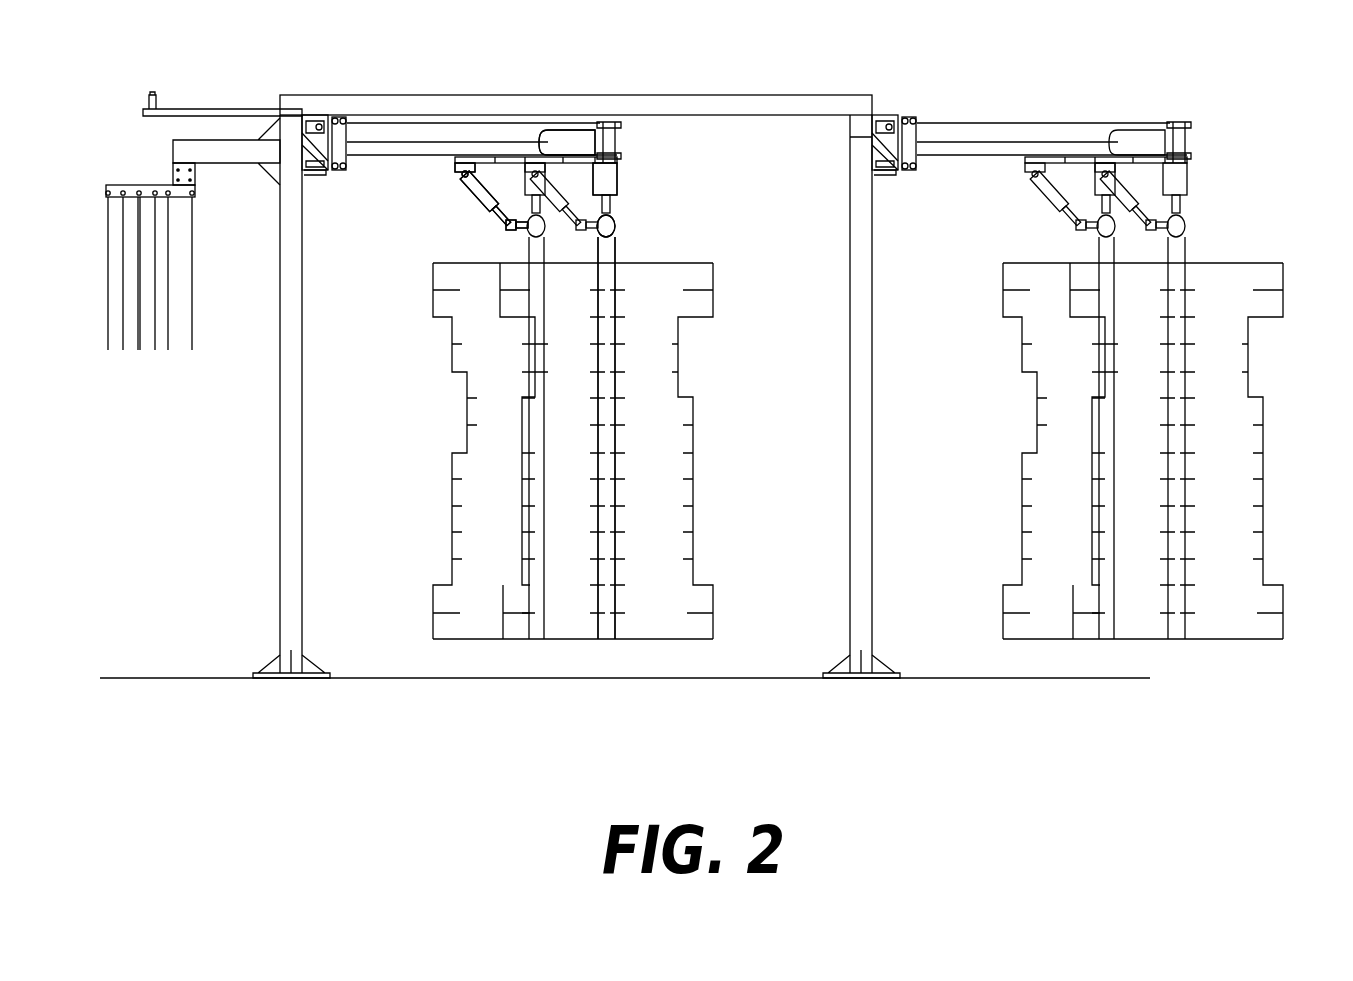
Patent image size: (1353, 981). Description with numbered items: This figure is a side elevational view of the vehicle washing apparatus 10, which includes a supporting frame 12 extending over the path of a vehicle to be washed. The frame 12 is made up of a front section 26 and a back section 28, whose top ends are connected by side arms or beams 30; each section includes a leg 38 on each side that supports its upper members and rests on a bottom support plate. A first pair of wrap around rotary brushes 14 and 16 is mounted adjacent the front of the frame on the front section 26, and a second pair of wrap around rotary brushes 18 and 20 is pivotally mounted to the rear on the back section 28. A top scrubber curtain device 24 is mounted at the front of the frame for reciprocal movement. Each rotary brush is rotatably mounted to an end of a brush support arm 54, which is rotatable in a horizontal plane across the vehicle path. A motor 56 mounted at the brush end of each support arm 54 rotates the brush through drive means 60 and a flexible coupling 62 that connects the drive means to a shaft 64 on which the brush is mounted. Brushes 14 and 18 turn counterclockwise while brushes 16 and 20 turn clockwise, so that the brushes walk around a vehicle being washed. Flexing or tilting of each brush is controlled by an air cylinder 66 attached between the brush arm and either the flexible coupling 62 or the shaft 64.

The vehicle washing apparatus 10 is at (682, 340).
The supporting frame 12 is at (602, 349).
The wrap around rotary brush 14 is at (468, 440).
The wrap around rotary brush 16 is at (696, 412).
The wrap around rotary brush 18 is at (1036, 412).
The wrap around rotary brush 20 is at (1258, 385).
The top scrubber curtain device 24 is at (107, 220).
The front section 26 is at (303, 240).
The back section 28 is at (849, 213).
The side arms or beams 30 is at (586, 95).
The leg 38 is at (303, 357).
The brush support arm 54 is at (378, 157).
The motor 56 is at (560, 148).
The drive means 60 is at (618, 180).
The flexible coupling 62 is at (618, 222).
The shaft 64 is at (618, 247).
The air cylinder 66 is at (483, 195).